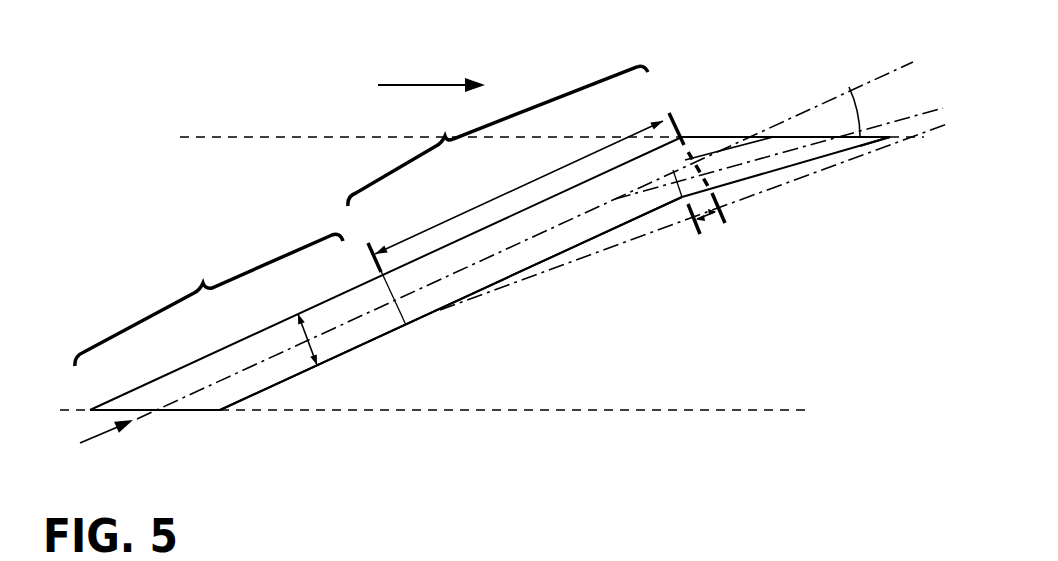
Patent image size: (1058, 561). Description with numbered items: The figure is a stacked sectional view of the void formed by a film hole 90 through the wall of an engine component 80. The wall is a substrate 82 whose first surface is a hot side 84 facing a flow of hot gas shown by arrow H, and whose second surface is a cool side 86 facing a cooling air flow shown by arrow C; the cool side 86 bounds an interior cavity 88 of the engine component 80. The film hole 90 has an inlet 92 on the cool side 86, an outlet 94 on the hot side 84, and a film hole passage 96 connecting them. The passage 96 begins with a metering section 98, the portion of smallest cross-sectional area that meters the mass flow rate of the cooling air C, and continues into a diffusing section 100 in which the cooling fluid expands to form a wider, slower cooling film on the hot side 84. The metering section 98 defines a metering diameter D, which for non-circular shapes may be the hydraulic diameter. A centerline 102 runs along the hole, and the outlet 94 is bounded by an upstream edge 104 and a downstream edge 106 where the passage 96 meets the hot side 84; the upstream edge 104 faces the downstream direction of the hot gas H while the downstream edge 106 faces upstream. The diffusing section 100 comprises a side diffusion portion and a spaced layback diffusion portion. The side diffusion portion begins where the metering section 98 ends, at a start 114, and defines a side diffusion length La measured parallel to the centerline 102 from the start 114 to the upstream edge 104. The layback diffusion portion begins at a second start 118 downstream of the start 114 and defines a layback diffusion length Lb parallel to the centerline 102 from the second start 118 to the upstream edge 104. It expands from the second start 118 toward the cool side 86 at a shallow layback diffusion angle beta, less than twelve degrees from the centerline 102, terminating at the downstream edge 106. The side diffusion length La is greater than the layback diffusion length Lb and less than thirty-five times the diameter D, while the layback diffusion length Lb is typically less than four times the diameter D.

The engine component 80 is at (232, 94).
The substrate 82 is at (807, 327).
The hot side 84 is at (315, 137).
The cool side 86 is at (556, 410).
The interior cavity 88 is at (375, 465).
The film hole 90 is at (606, 256).
The inlet 92 is at (155, 411).
The outlet 94 is at (772, 137).
The film hole passage 96 is at (567, 240).
The metering section 98 is at (209, 300).
The diffusing section 100 is at (498, 136).
The centerline 102 is at (260, 362).
The upstream edge 104 is at (680, 135).
The downstream edge 106 is at (890, 139).
The start of the side diffusion portion 114 is at (375, 266).
The second start 118 is at (682, 198).
The side diffusion length La is at (573, 162).
The layback diffusion length Lb is at (707, 222).
The metering diameter D is at (318, 342).
The layback diffusion angle beta is at (851, 101).
The hot gas flow H is at (422, 85).
The cooling air flow C is at (96, 443).